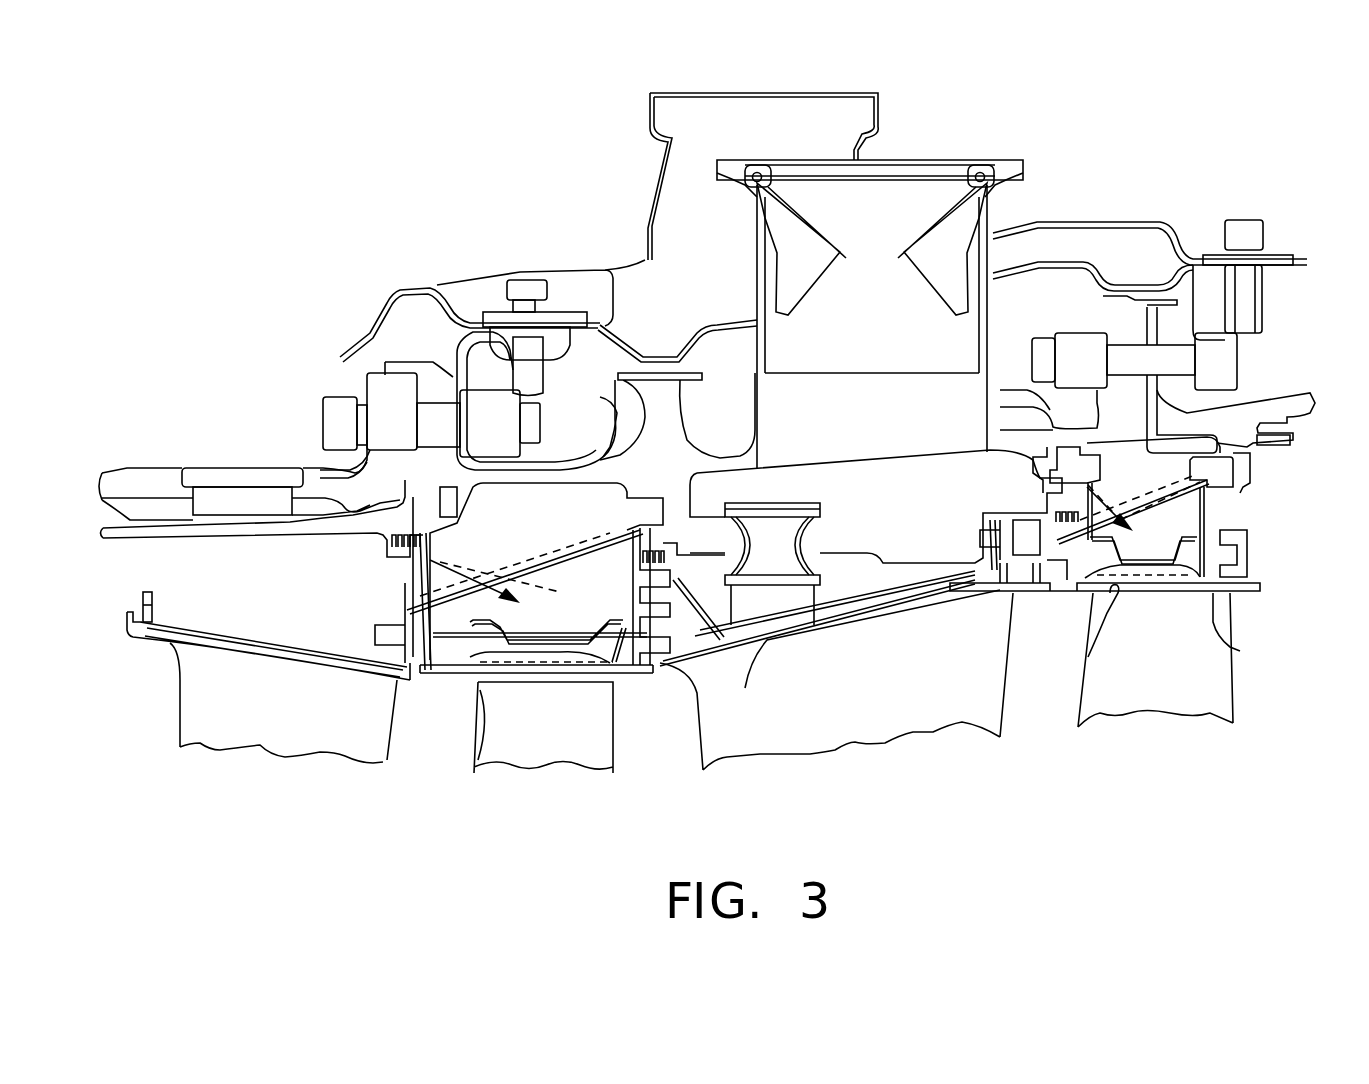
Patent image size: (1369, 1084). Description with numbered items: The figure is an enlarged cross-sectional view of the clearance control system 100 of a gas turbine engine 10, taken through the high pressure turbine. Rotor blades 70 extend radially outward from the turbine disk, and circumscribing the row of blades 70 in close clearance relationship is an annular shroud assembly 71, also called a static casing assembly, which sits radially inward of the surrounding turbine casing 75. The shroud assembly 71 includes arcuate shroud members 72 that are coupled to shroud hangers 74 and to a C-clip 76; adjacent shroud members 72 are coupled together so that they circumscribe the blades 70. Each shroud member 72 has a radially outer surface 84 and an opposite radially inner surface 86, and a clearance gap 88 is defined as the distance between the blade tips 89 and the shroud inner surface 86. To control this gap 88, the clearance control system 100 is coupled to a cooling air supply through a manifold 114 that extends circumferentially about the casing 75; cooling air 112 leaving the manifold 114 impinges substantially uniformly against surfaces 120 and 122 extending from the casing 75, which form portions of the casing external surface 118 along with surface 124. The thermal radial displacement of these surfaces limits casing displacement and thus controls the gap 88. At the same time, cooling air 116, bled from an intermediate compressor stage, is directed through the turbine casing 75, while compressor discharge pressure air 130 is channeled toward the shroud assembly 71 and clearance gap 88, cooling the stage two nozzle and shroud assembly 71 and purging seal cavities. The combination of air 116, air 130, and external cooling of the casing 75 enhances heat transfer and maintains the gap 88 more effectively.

The gas turbine engine 10 is at (330, 150).
The clearance control system 100 is at (596, 230).
The cooling air 112 is at (414, 345).
The manifold 114 is at (1073, 222).
The surface 122 is at (393, 360).
The surface 120 is at (623, 372).
The surface 124 is at (620, 440).
The external surface 118 is at (608, 450).
The turbine casing 75 is at (692, 477).
The cooling air 116 is at (891, 205).
The C-clip 76 is at (670, 600).
The compressor discharge pressure air 130 is at (325, 590).
The shroud hanger 74 is at (650, 630).
The clearance gap 88 is at (462, 682).
The blade tips 89 is at (495, 680).
The blades 70 is at (535, 757).
The shroud members 72 is at (510, 673).
The radially outer surface 84 is at (590, 680).
The radially inner surface 86 is at (560, 650).
The shroud assembly 71 is at (662, 712).